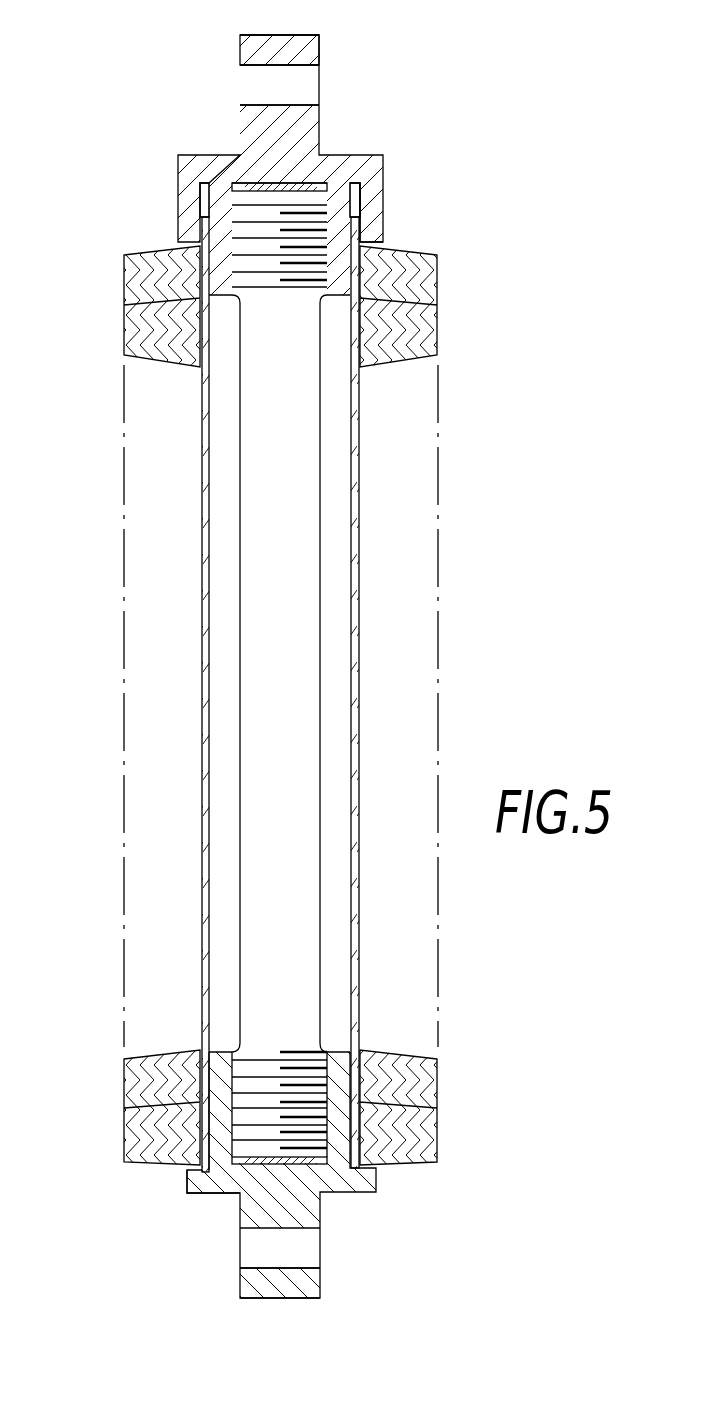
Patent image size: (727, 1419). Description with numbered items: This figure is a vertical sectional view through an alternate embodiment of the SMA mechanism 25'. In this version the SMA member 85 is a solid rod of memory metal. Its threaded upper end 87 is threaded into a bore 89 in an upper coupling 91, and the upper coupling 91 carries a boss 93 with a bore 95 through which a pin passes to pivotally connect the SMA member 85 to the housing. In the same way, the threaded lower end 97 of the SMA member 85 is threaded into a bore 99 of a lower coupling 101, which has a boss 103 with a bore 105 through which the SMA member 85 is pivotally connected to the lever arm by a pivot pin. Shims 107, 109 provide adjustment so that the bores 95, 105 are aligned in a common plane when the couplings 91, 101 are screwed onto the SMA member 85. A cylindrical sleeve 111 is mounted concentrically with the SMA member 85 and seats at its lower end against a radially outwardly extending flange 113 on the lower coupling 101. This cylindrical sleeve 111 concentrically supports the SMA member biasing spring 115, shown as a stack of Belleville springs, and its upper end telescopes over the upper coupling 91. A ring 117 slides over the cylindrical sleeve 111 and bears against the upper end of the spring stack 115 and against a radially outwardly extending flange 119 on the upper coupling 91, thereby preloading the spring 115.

The SMA mechanism 25' is at (232, 706).
The SMA member 85 is at (293, 735).
The threaded upper end 87 is at (310, 221).
The bore 89 is at (245, 215).
The upper coupling 91 is at (217, 155).
The boss 93 is at (319, 38).
The bore 95 is at (308, 66).
The threaded lower end 97 is at (307, 1063).
The bore 99 is at (232, 1085).
The lower coupling 101 is at (357, 1195).
The boss 103 is at (313, 1283).
The bore 105 is at (267, 1265).
The shim 107 is at (292, 183).
The shim 109 is at (269, 1163).
The cylindrical sleeve 111 is at (360, 496).
The radially outwardly extending flange 113 is at (187, 1178).
The SMA member biasing spring 115 is at (123, 1085).
The ring 117 is at (187, 206).
The radially outwardly extending flange 119 is at (376, 172).